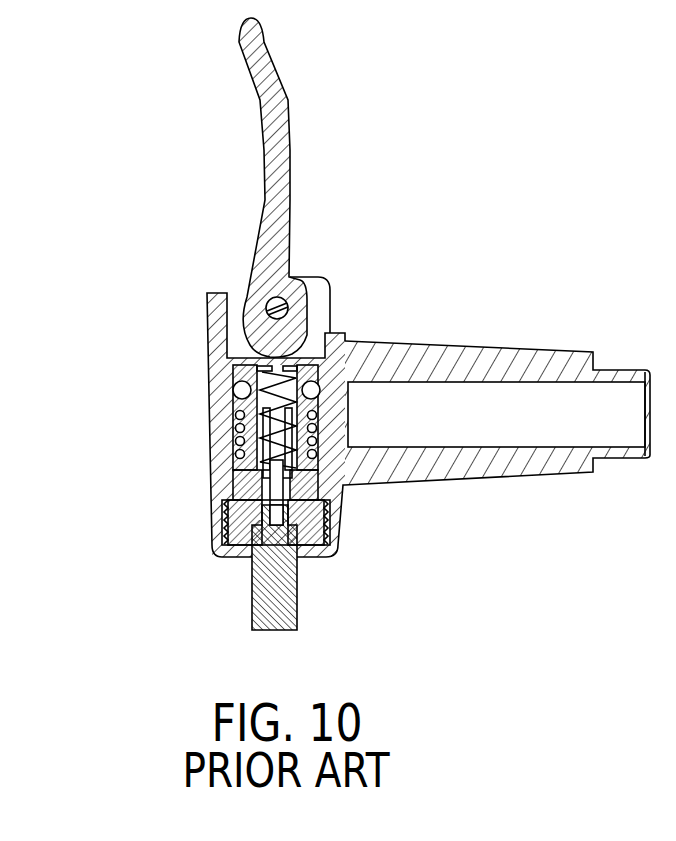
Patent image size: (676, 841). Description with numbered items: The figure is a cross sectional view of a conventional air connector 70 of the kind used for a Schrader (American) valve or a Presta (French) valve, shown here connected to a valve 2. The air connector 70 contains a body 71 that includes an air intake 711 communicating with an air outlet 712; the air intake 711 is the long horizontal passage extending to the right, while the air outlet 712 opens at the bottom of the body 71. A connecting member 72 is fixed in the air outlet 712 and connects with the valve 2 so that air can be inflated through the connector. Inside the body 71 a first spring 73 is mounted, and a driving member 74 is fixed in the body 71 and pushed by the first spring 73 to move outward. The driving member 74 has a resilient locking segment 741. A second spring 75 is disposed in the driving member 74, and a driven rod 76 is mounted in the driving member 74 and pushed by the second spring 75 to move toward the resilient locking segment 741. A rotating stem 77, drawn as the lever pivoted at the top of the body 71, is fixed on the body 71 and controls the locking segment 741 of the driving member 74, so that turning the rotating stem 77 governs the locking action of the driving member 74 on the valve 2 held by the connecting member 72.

The air connector 70 is at (158, 330).
The body 71 is at (207, 404).
The air intake 711 is at (377, 397).
The air outlet 712 is at (232, 545).
The connecting member 72 is at (308, 545).
The first spring 73 is at (236, 450).
The driving member 74 is at (238, 385).
The resilient locking segment 741 is at (260, 490).
The second spring 75 is at (312, 352).
The driven rod 76 is at (246, 503).
The rotating stem 77 is at (246, 283).
The Schrader (American) valve 2 is at (252, 588).